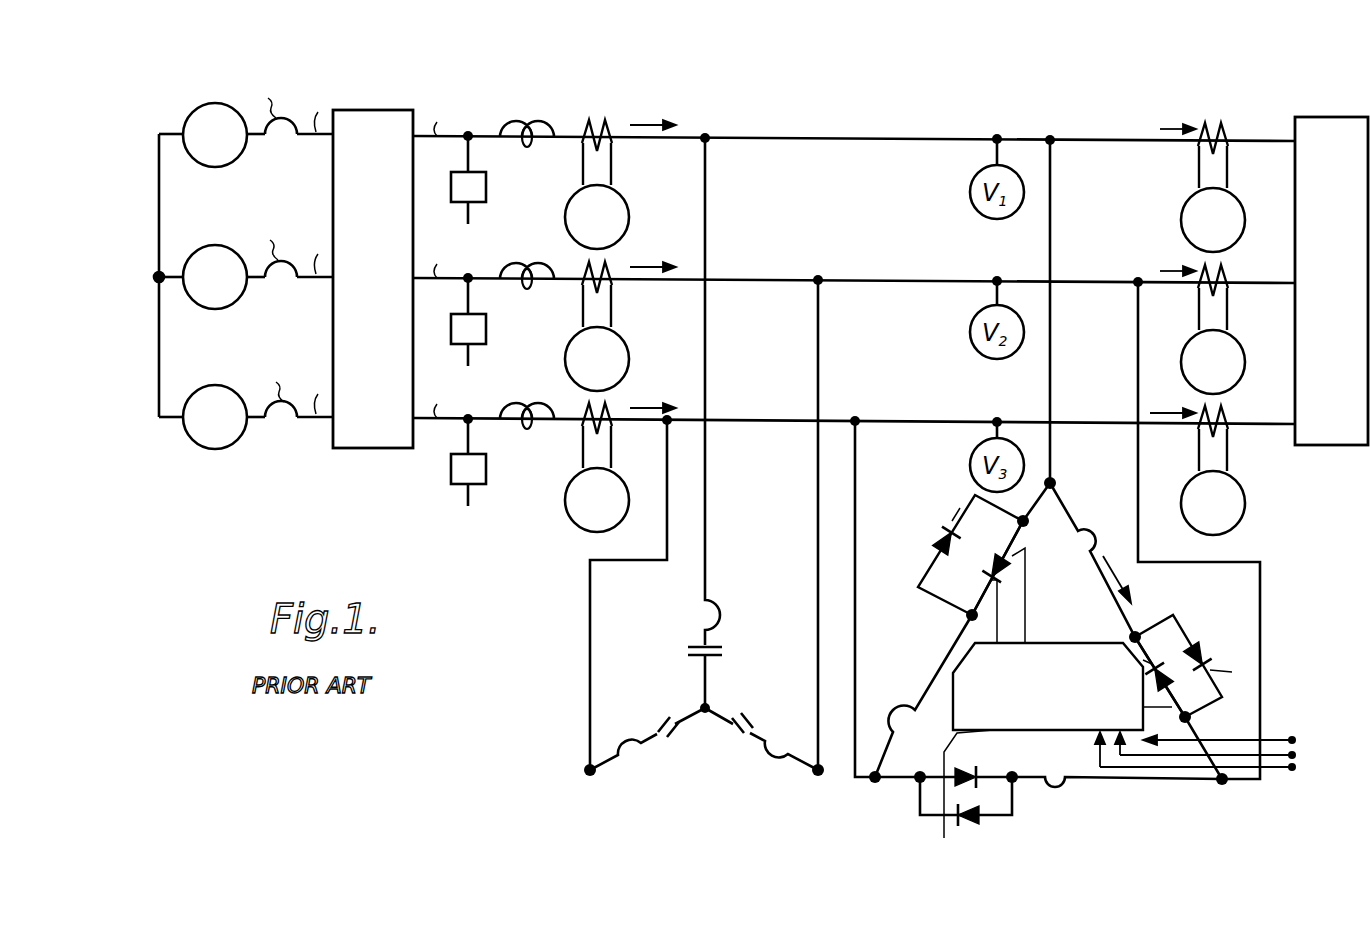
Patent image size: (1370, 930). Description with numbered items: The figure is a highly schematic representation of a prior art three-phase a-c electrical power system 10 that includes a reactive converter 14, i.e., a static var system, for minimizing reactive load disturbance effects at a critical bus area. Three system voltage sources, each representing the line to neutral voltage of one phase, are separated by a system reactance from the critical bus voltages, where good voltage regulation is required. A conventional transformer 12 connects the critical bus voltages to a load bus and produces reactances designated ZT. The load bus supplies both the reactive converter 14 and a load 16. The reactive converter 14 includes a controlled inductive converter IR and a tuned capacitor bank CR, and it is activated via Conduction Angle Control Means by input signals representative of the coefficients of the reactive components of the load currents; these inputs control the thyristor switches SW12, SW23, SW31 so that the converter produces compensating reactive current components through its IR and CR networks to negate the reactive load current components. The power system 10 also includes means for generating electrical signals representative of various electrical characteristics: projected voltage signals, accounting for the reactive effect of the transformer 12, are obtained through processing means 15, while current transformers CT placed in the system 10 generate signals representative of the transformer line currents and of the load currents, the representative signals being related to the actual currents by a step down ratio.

The a-c electrical power system 10 is at (364, 553).
The transformer 12 is at (386, 165).
The reactive converter 14 is at (850, 653).
The processing means 15 is at (498, 467).
The load 16 is at (1338, 185).
The tuned capacitor bank CR is at (712, 810).
The controlled inductive converter IR is at (1106, 492).
The thyristor switch SW31 is at (935, 540).
The thyristor switch SW12 is at (1206, 645).
The thyristor switch SW23 is at (977, 818).
The current transformer CT is at (1244, 409).
The transformer reactance ZT is at (544, 402).